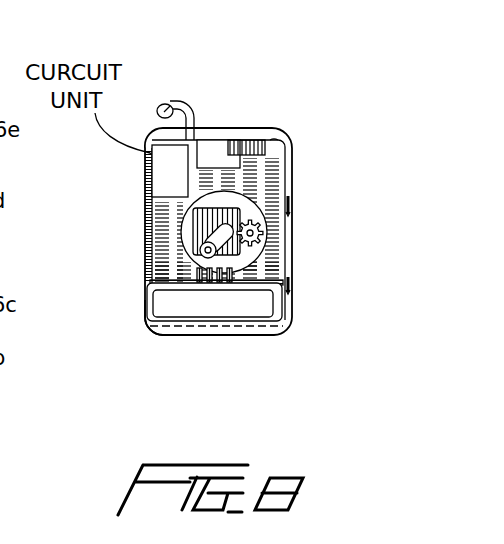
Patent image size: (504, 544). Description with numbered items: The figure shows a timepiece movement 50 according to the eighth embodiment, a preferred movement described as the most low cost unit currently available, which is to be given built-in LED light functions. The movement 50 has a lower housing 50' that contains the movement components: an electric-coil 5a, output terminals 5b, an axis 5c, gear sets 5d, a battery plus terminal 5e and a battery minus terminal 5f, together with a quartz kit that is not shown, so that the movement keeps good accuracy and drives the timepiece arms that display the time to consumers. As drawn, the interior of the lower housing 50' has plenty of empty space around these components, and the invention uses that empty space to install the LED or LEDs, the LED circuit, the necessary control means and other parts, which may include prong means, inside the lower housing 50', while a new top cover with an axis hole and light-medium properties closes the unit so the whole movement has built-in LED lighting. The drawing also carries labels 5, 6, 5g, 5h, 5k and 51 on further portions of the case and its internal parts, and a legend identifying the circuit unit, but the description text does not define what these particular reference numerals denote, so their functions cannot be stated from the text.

The circuit unit case 5 is at (161, 110).
The hook strap 6 is at (196, 112).
The electric-coil 5a is at (213, 150).
The output terminals 5b is at (238, 225).
The axis 5c is at (270, 143).
The gear sets 5d is at (288, 212).
The battery "+" terminal 5e is at (289, 314).
The battery "−" terminal 5f is at (147, 317).
The terminal block 5g is at (148, 183).
The connector pins 5h is at (148, 263).
The motor drive unit 5k is at (148, 226).
The movement 50 is at (342, 284).
The lower housing 50' is at (258, 362).
The partition 51 is at (278, 264).